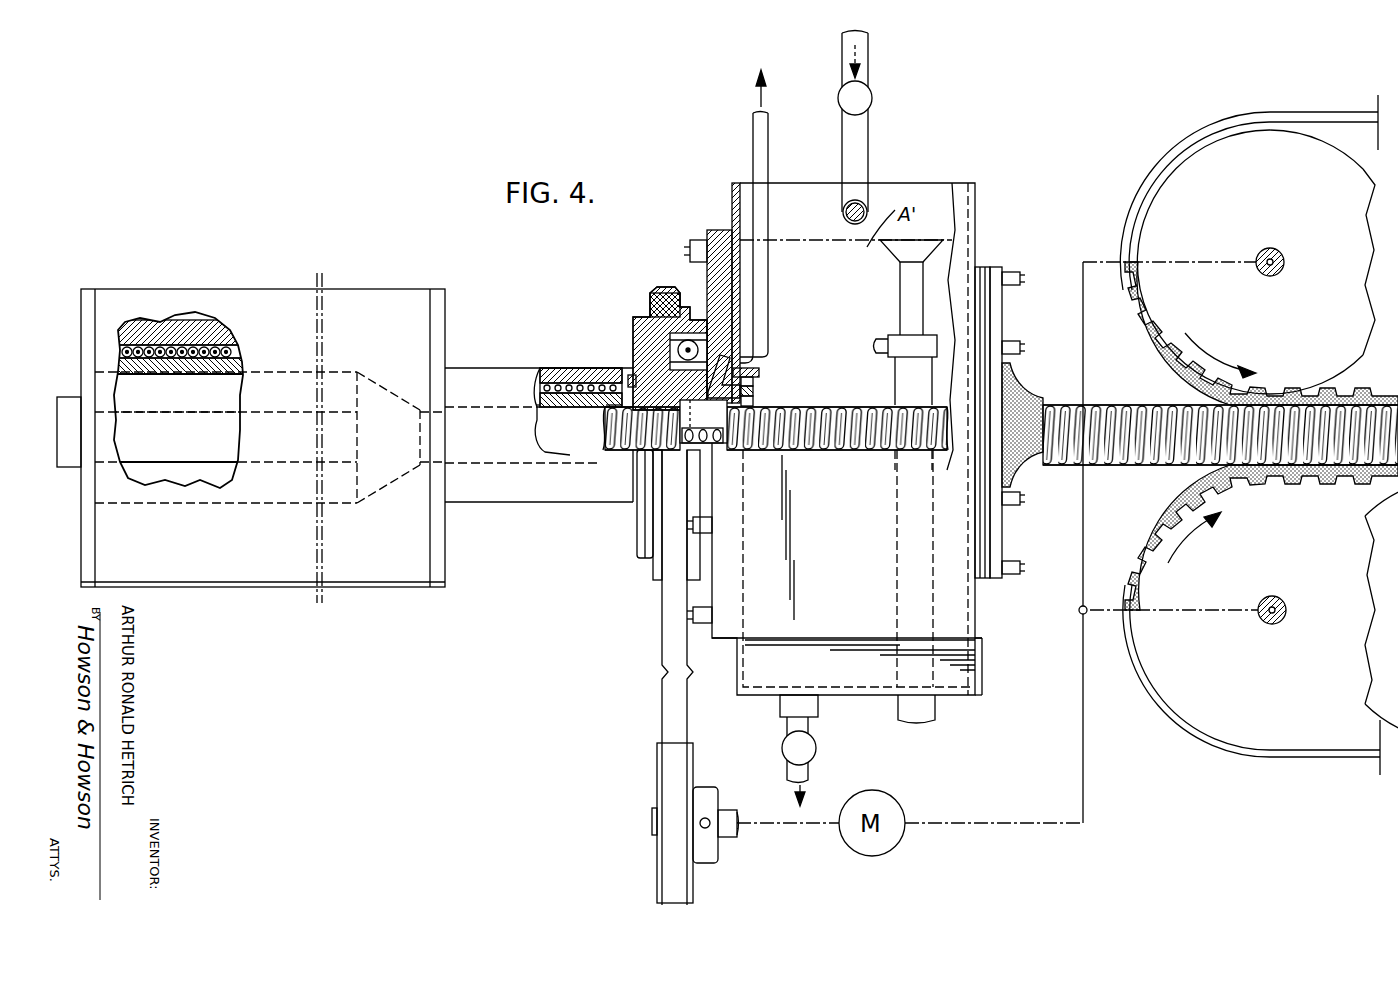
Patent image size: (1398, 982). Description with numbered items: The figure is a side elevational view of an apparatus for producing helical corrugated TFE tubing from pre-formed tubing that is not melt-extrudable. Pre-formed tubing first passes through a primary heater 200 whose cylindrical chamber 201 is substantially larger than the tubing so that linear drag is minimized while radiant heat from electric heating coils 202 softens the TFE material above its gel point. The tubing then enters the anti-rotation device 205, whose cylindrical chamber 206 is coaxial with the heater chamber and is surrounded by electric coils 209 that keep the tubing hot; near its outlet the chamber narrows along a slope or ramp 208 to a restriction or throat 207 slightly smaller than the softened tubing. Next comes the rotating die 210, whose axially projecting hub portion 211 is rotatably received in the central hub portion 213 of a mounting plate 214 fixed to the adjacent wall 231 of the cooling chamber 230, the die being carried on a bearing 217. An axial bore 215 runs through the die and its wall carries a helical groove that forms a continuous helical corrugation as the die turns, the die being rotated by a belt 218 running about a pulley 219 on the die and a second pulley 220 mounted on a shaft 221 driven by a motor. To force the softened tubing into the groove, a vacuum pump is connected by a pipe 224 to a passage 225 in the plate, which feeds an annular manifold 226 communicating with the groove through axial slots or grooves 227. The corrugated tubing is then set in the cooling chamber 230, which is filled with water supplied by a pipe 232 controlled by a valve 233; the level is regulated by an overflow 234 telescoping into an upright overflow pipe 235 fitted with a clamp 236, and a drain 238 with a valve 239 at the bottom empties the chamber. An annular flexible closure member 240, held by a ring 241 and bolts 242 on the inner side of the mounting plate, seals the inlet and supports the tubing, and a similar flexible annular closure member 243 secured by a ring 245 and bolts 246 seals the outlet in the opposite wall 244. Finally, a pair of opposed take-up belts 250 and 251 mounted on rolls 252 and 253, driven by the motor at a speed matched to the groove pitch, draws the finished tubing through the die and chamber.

The primary heater 200 is at (288, 289).
The cylindrical chamber 201 is at (160, 372).
The electric heating coils 202 is at (195, 348).
The anti-rotation device 205 is at (612, 408).
The cylindrical chamber 206 is at (537, 408).
The restriction or throat 207 is at (632, 418).
The slope or ramp 208 is at (615, 448).
The electric coils 209 is at (585, 386).
The rotating die 210 is at (637, 312).
The hub portion 211 is at (690, 462).
The central hub portion 213 is at (722, 366).
The mounting plate 214 is at (726, 236).
The axial bore 215 is at (628, 448).
The bearing 217 is at (690, 348).
The belt 218 is at (662, 672).
The pulley 219 is at (662, 297).
The second pulley 220 is at (657, 768).
The shaft 221 is at (735, 832).
The pipe 224 is at (769, 150).
The passage 225 is at (703, 421).
The annular manifold 226 is at (755, 391).
The axial slots or grooves 227 is at (713, 444).
The cooling chamber 230 is at (903, 186).
The wall 231 is at (732, 192).
The pipe 232 is at (870, 127).
The valve 233 is at (870, 96).
The overflow 234 is at (890, 246).
The overflow pipe 235 is at (900, 376).
The clamp 236 is at (872, 345).
The drain 238 is at (787, 720).
The valve 239 is at (817, 750).
The annular flexible closure member 240 is at (755, 400).
The ring 241 is at (760, 370).
The bolts 242 is at (755, 381).
The flexible annular closure member 243 is at (1018, 395).
The wall 244 is at (978, 246).
The ring 245 is at (996, 318).
The bolts 246 is at (1017, 280).
The take-up belt 250 is at (1320, 392).
The take-up belt 251 is at (1332, 476).
The roll 252 is at (1145, 178).
The roll 253 is at (1205, 712).